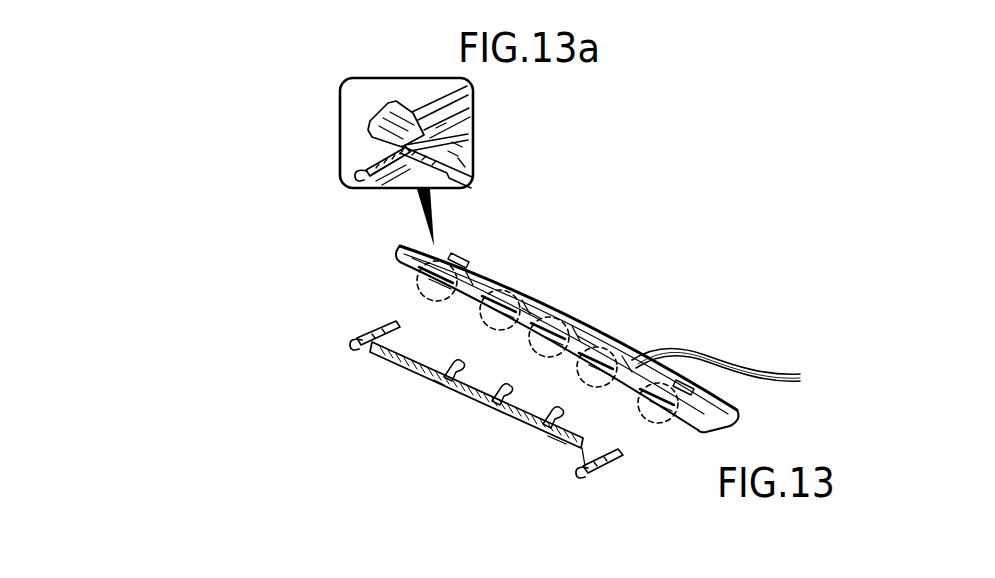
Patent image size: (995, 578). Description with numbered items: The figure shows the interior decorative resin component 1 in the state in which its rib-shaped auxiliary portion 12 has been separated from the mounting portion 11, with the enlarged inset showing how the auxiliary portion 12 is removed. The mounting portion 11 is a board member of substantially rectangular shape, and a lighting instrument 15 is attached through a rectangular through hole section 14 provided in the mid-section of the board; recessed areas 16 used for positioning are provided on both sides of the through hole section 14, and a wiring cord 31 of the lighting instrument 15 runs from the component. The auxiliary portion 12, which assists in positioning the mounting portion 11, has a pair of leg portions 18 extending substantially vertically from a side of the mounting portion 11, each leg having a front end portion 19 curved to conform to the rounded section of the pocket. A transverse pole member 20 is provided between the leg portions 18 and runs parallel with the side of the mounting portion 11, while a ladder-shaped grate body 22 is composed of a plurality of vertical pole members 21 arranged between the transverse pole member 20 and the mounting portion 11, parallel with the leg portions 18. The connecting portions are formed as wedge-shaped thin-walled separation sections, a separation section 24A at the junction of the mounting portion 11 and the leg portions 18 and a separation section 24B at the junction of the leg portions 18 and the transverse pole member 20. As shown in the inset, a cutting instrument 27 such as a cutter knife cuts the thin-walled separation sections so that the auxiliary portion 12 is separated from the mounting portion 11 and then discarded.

In FIG. 13, the interior decorative resin component 1 is at (665, 293).
In FIG. 13a, the mounting portion 11 is at (378, 108).
In FIG. 13, the mounting portion 11 is at (484, 262).
In FIG. 13a, the auxiliary portion 12 is at (385, 156).
In FIG. 13, the auxiliary portion 12 is at (388, 364).
In FIG. 13, the through hole section 14 is at (533, 315).
In FIG. 13, the lighting instrument 15 is at (587, 333).
In FIG. 13, the recessed areas 16 is at (470, 253).
In FIG. 13a, the leg portions 18 is at (404, 180).
In FIG. 13, the leg portions 18 is at (382, 323).
In FIG. 13a, the front end portion 19 is at (358, 178).
In FIG. 13, the front end portion 19 is at (353, 345).
In FIG. 13a, the transverse pole member 20 is at (385, 173).
In FIG. 13, the transverse pole member 20 is at (557, 452).
In FIG. 13, the vertical pole members 21 is at (549, 430).
In FIG. 13, the ladder-shaped grate body 22 is at (437, 386).
In FIG. 13a, the thin-walled separation section 24A is at (470, 138).
In FIG. 13a, the thin-walled separation section 24B is at (376, 165).
In FIG. 13a, the cutting instrument 27 is at (405, 107).
In FIG. 13, the wiring cord 31 is at (737, 365).